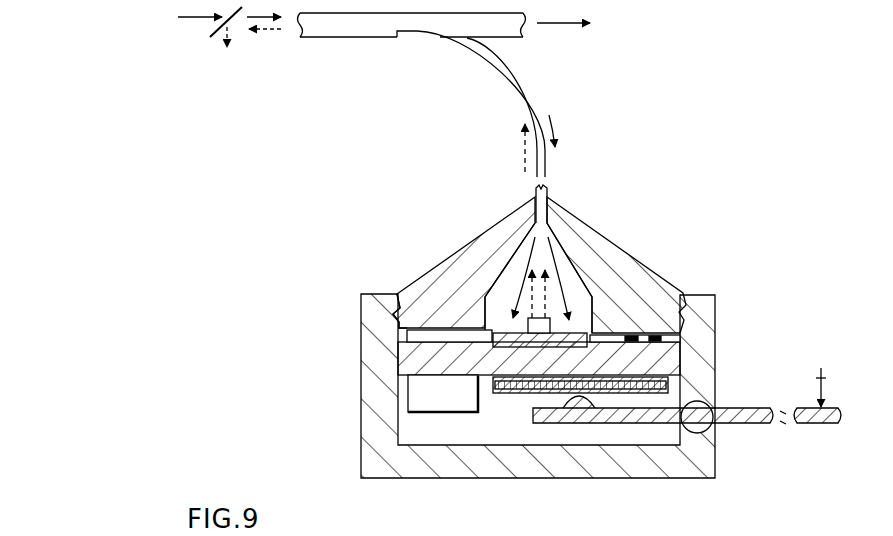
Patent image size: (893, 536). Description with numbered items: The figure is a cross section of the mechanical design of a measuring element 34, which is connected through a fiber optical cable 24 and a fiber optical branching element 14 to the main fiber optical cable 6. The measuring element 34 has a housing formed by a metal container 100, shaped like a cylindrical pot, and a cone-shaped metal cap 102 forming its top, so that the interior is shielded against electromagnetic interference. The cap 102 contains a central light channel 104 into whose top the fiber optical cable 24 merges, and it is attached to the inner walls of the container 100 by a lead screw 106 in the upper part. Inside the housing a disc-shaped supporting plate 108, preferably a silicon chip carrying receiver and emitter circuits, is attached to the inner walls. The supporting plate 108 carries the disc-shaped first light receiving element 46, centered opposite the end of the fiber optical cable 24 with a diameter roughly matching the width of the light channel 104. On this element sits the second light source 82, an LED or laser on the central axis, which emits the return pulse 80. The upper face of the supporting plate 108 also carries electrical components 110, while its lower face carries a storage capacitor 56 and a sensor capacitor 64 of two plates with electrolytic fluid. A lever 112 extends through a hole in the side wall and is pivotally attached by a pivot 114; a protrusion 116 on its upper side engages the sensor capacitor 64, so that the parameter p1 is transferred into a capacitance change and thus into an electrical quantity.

The main fiber optical cable 6 is at (330, 31).
The fiber optical branching element 14 is at (407, 31).
The fiber optical cable 24 is at (546, 169).
The measuring element 34 is at (441, 247).
The cap 102 is at (428, 277).
The return pulse 80 is at (548, 293).
The light channel 104 is at (567, 272).
The first light receiving element 46 is at (572, 330).
The container 100 is at (367, 323).
The lead screw 106 is at (397, 304).
The supporting plate 108 is at (405, 360).
The electrical components 110 is at (660, 330).
The second light source 82 is at (517, 327).
The storage capacitor 56 is at (413, 395).
The sensor capacitor 64 is at (681, 380).
The pivot 114 is at (715, 408).
The protrusion 116 is at (557, 400).
The lever 112 is at (810, 424).
The parameter p1 is at (826, 382).